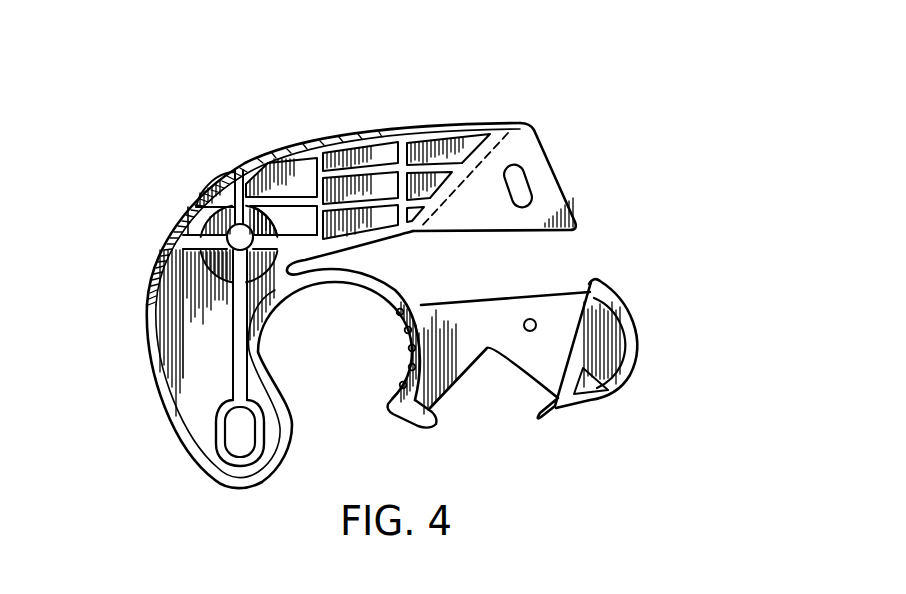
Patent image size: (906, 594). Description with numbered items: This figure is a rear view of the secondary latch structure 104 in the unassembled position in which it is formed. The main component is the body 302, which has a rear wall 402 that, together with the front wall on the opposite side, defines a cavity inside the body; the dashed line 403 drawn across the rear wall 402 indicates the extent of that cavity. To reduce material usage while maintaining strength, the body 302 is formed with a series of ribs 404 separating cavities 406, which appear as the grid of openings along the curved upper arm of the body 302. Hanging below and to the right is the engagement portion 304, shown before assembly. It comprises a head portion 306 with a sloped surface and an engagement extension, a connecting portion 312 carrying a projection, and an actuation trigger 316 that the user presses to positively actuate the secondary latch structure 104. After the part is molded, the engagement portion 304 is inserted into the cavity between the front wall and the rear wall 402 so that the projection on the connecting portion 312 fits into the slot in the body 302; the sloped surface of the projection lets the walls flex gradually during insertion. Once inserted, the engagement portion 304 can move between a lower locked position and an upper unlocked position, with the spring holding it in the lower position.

The secondary latch structure 104 is at (462, 102).
The body 302 is at (288, 173).
The engagement portion 304 is at (573, 322).
The head portion 306 is at (608, 354).
The connecting portion 312 is at (535, 310).
The actuation trigger 316 is at (408, 346).
The rear wall 402 is at (547, 178).
The dashed line 403 is at (513, 129).
The ribs 404 is at (352, 165).
The cavities 406 is at (383, 183).